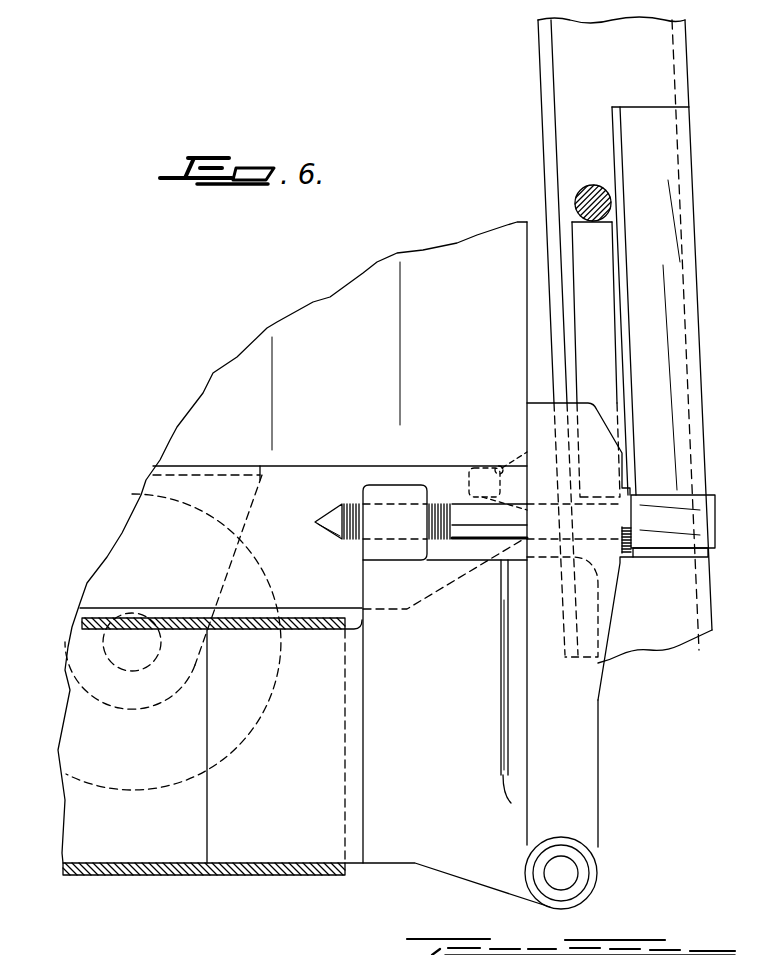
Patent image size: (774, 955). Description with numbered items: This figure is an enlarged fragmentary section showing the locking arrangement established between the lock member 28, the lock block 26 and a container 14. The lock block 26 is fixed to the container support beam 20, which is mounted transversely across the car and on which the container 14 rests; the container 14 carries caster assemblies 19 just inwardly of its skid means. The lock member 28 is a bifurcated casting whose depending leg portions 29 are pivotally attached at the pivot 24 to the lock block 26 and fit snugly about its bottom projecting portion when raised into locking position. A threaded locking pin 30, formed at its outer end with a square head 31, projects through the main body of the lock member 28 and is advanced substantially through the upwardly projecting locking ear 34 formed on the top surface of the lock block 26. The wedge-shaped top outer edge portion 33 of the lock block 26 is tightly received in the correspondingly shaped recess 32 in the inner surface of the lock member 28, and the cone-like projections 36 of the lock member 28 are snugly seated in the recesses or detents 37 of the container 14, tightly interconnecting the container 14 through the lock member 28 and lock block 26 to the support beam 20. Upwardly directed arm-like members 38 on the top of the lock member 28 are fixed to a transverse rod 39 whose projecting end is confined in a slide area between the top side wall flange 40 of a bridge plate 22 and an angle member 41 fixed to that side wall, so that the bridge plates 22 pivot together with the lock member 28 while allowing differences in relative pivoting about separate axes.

The container 14 is at (389, 266).
The caster assemblies 19 is at (250, 556).
The container support beam 20 is at (297, 610).
The bridge plates 22 is at (690, 55).
The pivot pin 24 is at (567, 870).
The lock block 26 is at (424, 704).
The lock member 28 is at (615, 614).
The depending leg portions 29 is at (594, 767).
The threaded locking pin 30 is at (458, 502).
The square head 31 is at (713, 500).
The recess 32 is at (598, 587).
The wedge-shaped top outer edge portion 33 is at (506, 593).
The locking ear 34 is at (378, 482).
The cone-like projections 36 is at (503, 466).
The recesses or detents 37 is at (500, 470).
The arm-like members 38 is at (605, 260).
The transverse rod 39 is at (588, 186).
The top side wall flange 40 is at (543, 122).
The angle member 41 is at (665, 157).